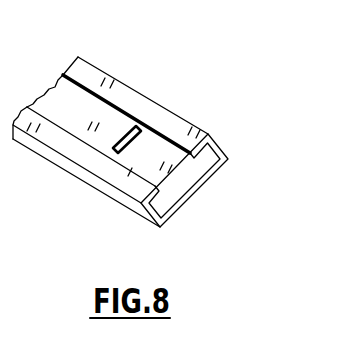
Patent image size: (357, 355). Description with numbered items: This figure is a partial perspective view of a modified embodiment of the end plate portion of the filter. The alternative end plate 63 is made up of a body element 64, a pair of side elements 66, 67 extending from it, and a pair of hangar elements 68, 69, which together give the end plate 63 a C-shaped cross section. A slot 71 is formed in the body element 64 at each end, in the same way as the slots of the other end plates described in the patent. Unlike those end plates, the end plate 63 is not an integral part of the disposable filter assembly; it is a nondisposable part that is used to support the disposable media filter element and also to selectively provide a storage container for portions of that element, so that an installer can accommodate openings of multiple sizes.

The end plate 63 is at (100, 62).
The body element 64 is at (185, 175).
The side element 66 is at (220, 142).
The side element 67 is at (152, 215).
The hangar element 68 is at (178, 127).
The hangar element 69 is at (107, 168).
The slot 71 is at (140, 127).